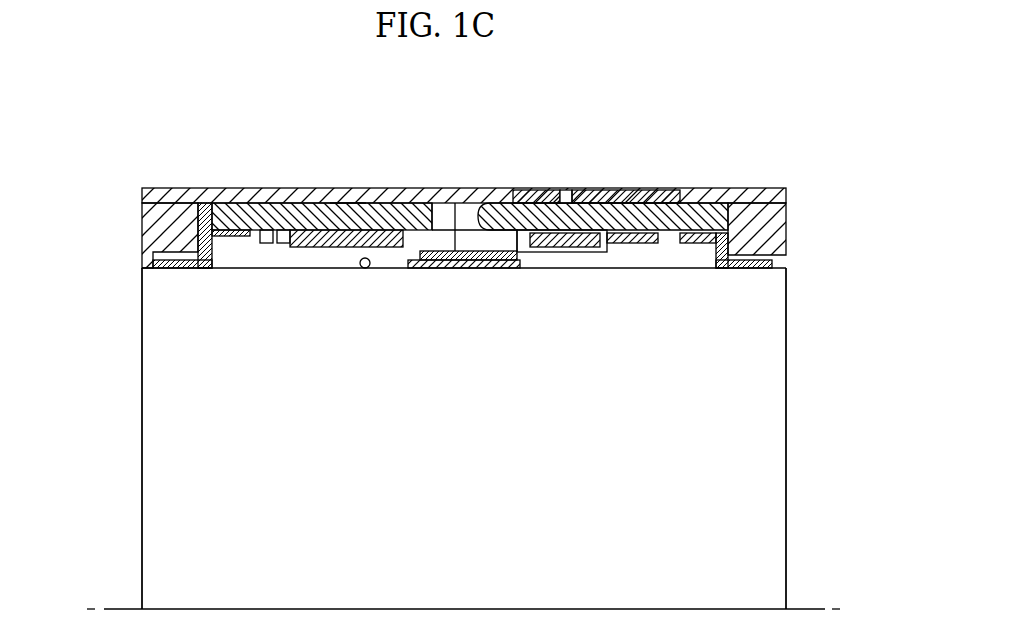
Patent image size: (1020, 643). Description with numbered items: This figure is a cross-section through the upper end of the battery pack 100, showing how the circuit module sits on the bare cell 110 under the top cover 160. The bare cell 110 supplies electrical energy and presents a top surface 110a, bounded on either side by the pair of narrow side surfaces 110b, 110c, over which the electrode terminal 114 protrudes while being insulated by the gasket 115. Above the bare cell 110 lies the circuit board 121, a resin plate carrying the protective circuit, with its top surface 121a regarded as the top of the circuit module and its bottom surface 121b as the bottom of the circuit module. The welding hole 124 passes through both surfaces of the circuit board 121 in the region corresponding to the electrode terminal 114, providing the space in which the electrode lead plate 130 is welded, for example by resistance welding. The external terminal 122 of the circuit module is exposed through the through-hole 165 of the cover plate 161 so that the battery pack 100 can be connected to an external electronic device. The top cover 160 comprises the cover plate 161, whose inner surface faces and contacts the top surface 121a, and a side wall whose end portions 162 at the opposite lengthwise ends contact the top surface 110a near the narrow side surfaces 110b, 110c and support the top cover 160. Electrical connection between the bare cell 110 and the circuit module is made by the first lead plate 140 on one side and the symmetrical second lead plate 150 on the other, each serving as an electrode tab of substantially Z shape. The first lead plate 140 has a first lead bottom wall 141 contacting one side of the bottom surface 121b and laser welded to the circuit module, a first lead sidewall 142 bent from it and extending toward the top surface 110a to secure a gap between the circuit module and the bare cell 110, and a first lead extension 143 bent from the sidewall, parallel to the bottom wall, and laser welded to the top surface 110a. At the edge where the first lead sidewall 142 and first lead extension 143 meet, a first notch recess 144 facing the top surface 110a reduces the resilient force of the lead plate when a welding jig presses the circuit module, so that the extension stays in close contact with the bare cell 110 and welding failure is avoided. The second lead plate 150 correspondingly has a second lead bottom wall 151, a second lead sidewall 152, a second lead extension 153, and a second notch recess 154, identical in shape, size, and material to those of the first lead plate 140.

The battery pack 100 is at (757, 98).
The bare cell 110 is at (788, 365).
The top surface 110a is at (368, 272).
The narrow side surface 110b is at (142, 425).
The narrow side surface 110c is at (786, 430).
The electrode terminal 114 is at (486, 262).
The gasket 115 is at (447, 270).
The circuit board 121 is at (313, 205).
The top surface 121a is at (348, 196).
The bottom surface 121b is at (422, 212).
The external terminal 122 is at (652, 187).
The welding hole 124 is at (488, 212).
The electrode lead plate 130 is at (455, 203).
The first lead plate 140 is at (742, 270).
The first lead bottom wall 141 is at (692, 233).
The first lead sidewall 142 is at (724, 232).
The first lead extension 143 is at (758, 270).
The first notch recess 144 is at (712, 272).
The second lead plate 150 is at (178, 270).
The second lead bottom wall 151 is at (232, 228).
The second lead sidewall 152 is at (208, 205).
The second lead extension 153 is at (161, 268).
The second notch recess 154 is at (212, 268).
The top cover 160 is at (130, 162).
The cover plate 161 is at (265, 230).
The end portions 162 is at (155, 230).
The through-hole 165 is at (549, 187).